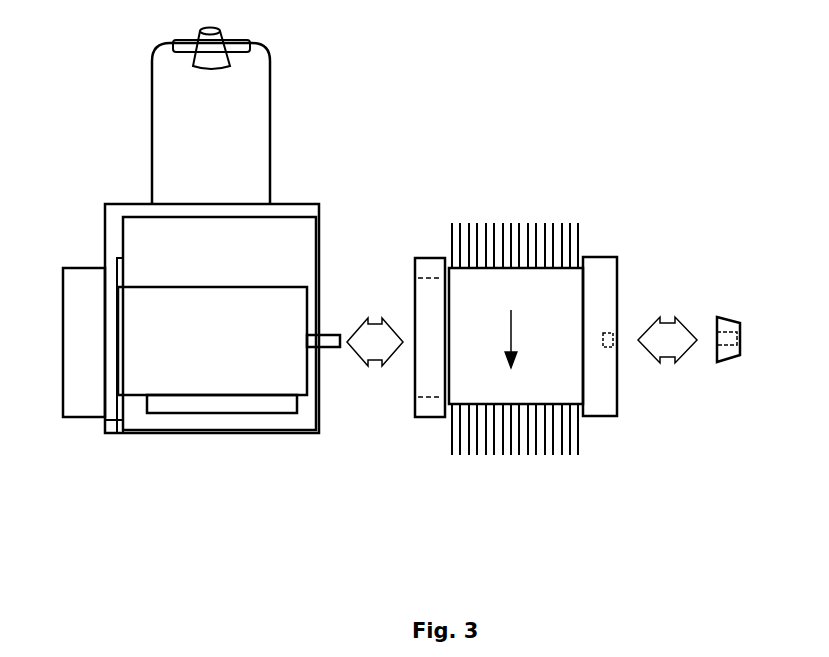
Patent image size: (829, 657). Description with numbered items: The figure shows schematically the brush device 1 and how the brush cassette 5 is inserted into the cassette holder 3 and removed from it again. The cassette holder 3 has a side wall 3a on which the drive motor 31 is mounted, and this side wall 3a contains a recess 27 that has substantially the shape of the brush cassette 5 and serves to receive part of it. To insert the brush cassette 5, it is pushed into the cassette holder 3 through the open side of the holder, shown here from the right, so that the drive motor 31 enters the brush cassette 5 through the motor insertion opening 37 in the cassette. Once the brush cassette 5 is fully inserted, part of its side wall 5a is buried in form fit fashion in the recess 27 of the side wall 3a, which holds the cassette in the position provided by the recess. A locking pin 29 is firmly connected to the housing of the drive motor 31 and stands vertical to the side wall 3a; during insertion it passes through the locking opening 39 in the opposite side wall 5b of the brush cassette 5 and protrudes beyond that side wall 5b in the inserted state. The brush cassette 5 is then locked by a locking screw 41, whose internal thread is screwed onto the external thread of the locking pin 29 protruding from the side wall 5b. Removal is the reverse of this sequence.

The brush device 1 is at (95, 84).
The cassette holder 3 is at (86, 191).
The side wall 3a is at (113, 236).
The recess 27 is at (107, 426).
The locking pin 29 is at (333, 337).
The drive motor 31 is at (254, 316).
The motor insertion opening 37 is at (431, 279).
The brush cassette 5 is at (623, 228).
The side wall 5a is at (432, 357).
The side wall 5b is at (620, 398).
The locking opening 39 is at (622, 347).
The locking screw 41 is at (742, 323).